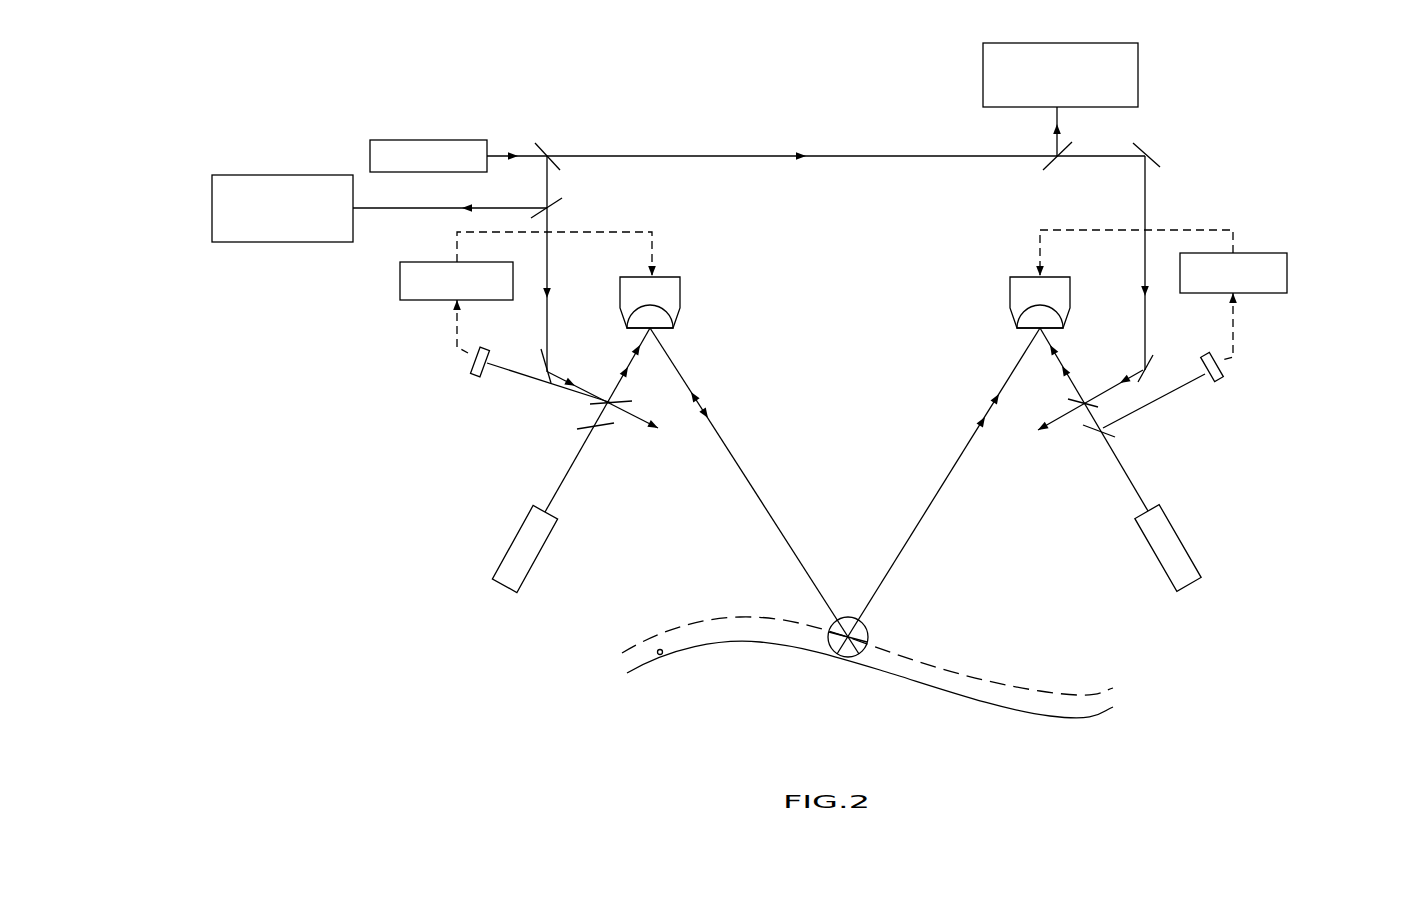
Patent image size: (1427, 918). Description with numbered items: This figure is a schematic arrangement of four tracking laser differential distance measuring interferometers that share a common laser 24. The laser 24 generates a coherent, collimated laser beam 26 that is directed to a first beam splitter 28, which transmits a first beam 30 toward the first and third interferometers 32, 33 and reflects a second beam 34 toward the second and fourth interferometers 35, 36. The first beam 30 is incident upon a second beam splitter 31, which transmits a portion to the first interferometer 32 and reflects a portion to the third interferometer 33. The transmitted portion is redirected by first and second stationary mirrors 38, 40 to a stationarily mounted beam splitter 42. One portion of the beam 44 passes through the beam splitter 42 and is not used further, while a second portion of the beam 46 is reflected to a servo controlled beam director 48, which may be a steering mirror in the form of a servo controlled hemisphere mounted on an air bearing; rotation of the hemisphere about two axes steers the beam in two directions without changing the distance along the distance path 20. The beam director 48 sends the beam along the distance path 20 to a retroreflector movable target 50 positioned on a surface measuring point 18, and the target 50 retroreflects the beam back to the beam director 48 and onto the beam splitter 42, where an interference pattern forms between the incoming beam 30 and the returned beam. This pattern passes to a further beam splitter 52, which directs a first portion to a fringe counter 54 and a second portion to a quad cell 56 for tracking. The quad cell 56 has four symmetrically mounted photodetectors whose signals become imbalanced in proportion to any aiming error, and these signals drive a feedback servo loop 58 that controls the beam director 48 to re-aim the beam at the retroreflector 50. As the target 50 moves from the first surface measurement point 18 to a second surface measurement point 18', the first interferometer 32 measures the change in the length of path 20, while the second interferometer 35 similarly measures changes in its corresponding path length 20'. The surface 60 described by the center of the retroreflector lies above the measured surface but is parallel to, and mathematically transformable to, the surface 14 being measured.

The surface being measured 14 is at (927, 694).
The surface measurement point 18 is at (862, 584).
The second surface measurement point 18' is at (675, 684).
The distance path 20 is at (938, 491).
The path length 20' is at (754, 491).
The laser 24 is at (478, 166).
The laser beam 26 is at (503, 154).
The first beam splitter 28 is at (550, 150).
The first beam 30 is at (858, 155).
The second beam splitter 31 is at (1044, 166).
The first interferometer 32 is at (1214, 190).
The third interferometer 33 is at (1109, 105).
The second beam 34 is at (545, 192).
The second interferometer 35 is at (408, 353).
The fourth interferometer 36 is at (333, 237).
The first stationary mirror 38 is at (1147, 150).
The second stationary mirror 40 is at (540, 359).
The stationarily mounted beam splitter 42 is at (615, 402).
The beam portion 44 is at (1063, 418).
The second beam portion 46 is at (1072, 378).
The servo controlled beam director 48 is at (675, 276).
The retroreflector movable target 50 is at (862, 544).
The further beam splitter 52 is at (607, 428).
The fringe counter 54 is at (534, 561).
The quad cell 56 is at (403, 443).
The feedback servo loop 58 is at (400, 284).
The surface described by the retroreflector center 60 is at (1047, 690).